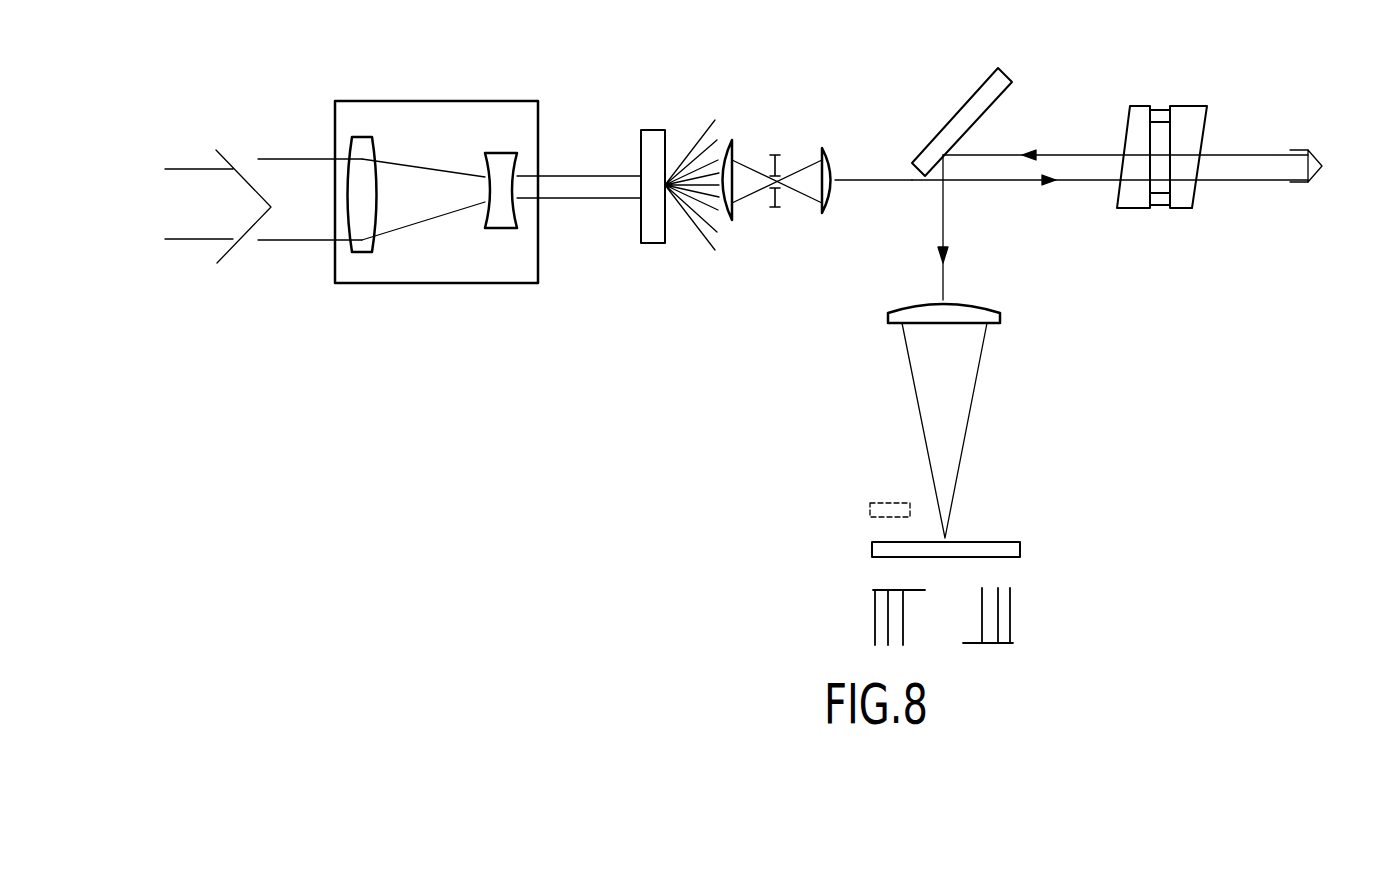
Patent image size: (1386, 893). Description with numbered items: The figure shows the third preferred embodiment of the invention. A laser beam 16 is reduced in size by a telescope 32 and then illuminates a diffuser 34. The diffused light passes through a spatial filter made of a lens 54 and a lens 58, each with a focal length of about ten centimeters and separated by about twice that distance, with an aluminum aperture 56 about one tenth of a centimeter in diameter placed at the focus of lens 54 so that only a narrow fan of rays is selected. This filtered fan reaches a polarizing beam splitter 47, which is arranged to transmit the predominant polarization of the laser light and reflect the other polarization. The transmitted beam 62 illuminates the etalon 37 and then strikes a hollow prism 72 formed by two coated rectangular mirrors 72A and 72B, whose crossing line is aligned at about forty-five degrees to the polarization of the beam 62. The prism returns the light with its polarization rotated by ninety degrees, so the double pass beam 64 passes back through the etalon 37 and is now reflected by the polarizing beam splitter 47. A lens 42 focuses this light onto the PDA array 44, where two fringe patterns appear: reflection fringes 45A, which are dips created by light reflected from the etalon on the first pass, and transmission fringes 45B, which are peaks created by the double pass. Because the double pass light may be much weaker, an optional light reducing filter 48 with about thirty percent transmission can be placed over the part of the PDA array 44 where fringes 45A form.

The laser beam 16 is at (203, 255).
The telescope 32 is at (433, 285).
The diffuser 34 is at (652, 245).
The lens 54 is at (727, 137).
The aluminum aperture 56 is at (778, 158).
The lens 58 is at (825, 143).
The polarizing beam splitter 47 is at (970, 90).
The beam 62 is at (1008, 182).
The double pass beam 64 is at (1073, 152).
The etalon 37 is at (1188, 105).
The hollow prism 72 is at (1328, 127).
The rectangular mirror 72A is at (1290, 133).
The rectangular mirror 72B is at (1290, 185).
The lens 42 is at (1000, 313).
The light reducing filter 48 is at (870, 508).
The PDA array 44 is at (1020, 543).
The fringes 45A is at (863, 618).
The fringe set 45B is at (1023, 608).